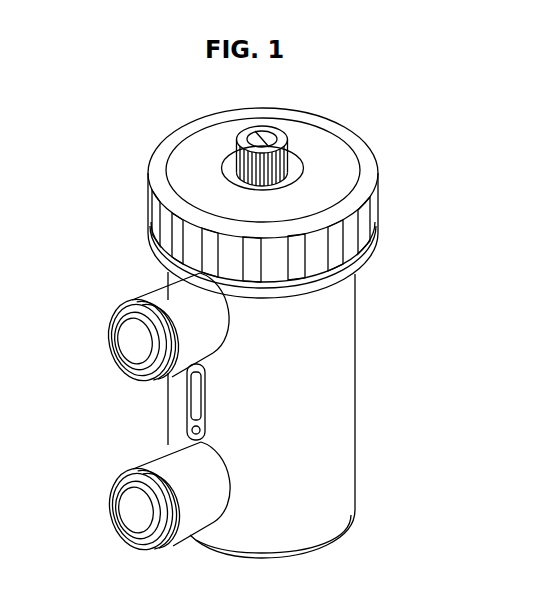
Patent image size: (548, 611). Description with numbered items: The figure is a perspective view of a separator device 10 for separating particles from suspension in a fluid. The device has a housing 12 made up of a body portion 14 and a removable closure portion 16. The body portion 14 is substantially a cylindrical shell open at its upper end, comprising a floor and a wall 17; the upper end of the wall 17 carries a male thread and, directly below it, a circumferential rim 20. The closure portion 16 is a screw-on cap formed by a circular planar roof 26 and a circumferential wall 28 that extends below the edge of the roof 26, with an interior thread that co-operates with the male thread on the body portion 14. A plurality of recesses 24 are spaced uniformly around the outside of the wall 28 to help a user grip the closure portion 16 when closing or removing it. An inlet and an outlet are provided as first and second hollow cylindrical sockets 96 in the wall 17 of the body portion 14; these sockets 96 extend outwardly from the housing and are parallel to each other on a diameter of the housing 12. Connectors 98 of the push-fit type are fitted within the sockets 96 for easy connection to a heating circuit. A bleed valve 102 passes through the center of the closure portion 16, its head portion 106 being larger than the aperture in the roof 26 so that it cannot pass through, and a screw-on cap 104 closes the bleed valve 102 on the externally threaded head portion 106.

The separator device 10 is at (423, 105).
The housing 12 is at (343, 331).
The body portion 14 is at (343, 401).
The wall 17 is at (343, 446).
The closure portion 16 is at (377, 203).
The circumferential rim 20 is at (366, 262).
The recesses 24 is at (346, 233).
The roof 26 is at (311, 146).
The circumferential wall 28 is at (146, 210).
The hollow cylindrical sockets 96 is at (158, 290).
The connectors 98 is at (125, 337).
The bleed valve 102 is at (234, 150).
The screw-on cap 104 is at (234, 158).
The head portion 106 is at (234, 141).